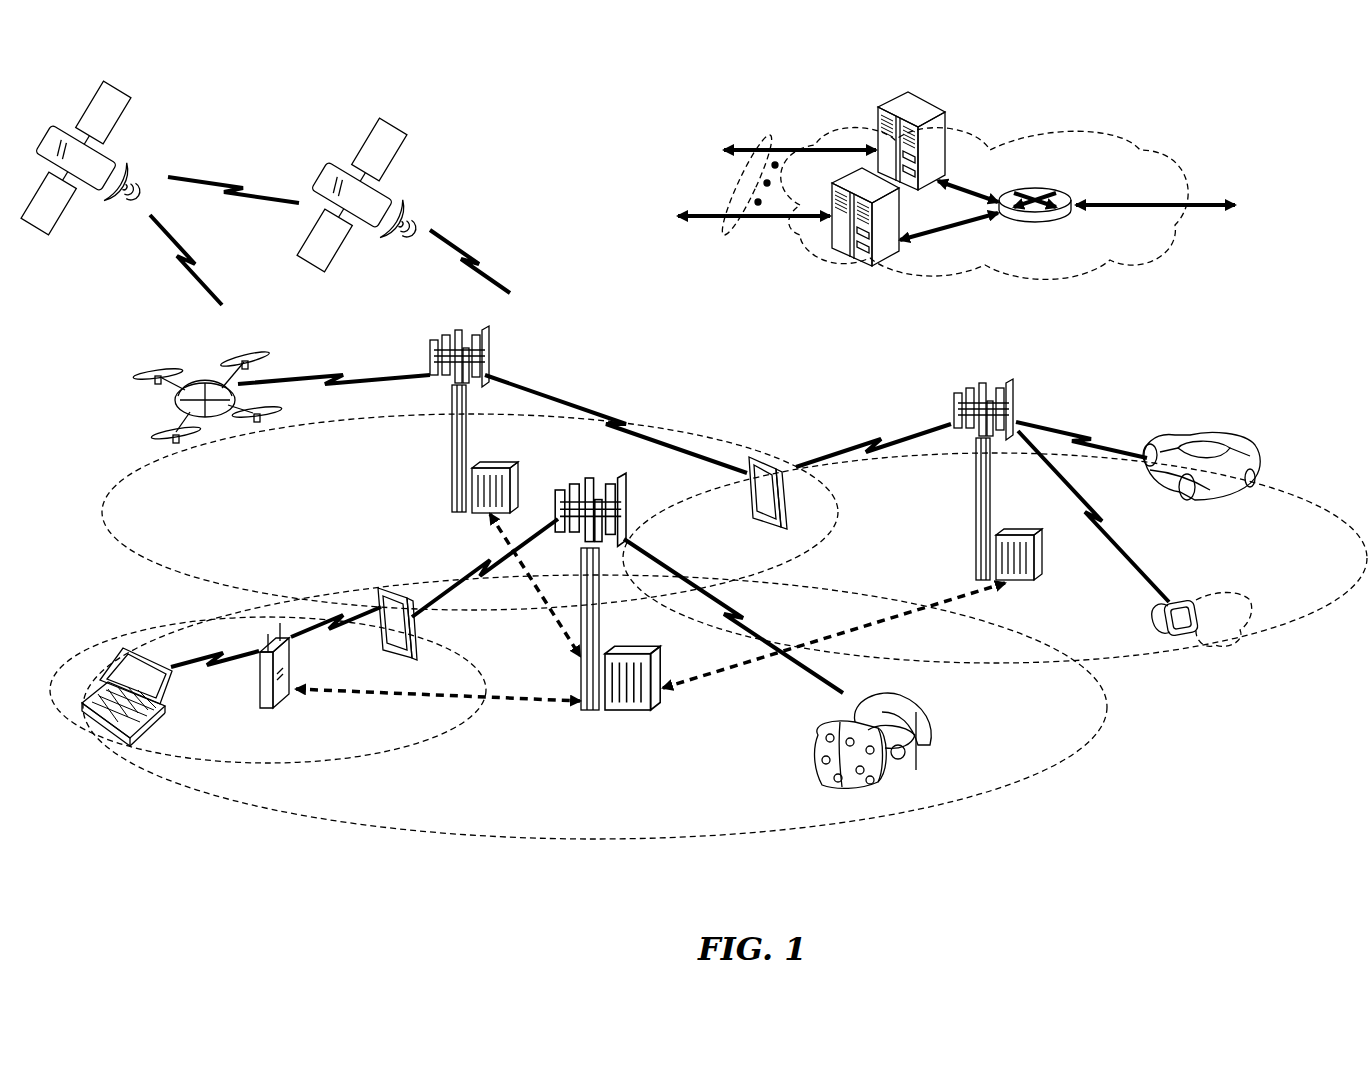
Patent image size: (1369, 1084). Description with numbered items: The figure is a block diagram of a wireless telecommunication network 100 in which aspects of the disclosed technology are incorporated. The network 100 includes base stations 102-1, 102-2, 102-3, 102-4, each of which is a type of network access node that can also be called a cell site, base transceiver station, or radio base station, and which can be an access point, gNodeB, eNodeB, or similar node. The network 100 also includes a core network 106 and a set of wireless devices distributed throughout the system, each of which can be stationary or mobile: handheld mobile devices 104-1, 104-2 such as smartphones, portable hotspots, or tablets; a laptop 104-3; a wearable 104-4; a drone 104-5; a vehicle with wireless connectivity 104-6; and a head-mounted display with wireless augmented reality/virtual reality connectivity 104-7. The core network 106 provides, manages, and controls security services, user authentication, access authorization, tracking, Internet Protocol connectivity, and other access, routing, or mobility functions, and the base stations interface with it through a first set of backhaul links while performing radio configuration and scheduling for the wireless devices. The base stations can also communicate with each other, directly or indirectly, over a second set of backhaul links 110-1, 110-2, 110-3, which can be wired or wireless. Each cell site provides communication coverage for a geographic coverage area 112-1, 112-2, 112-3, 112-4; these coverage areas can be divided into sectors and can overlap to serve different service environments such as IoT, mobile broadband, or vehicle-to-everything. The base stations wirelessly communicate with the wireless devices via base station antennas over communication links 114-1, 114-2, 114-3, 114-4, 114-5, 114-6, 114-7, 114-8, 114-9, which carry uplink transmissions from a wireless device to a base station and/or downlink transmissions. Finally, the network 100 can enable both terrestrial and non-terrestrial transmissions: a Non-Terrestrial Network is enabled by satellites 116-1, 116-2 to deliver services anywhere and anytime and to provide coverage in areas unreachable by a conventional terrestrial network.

The wireless telecommunication network 100 is at (1314, 98).
The base station 102-1 is at (590, 713).
The base station 102-2 is at (452, 470).
The base station 102-3 is at (976, 500).
The base station 102-4 is at (258, 693).
The handheld mobile device 104-1 is at (416, 643).
The handheld mobile device 104-2 is at (745, 500).
The laptop 104-3 is at (107, 738).
The wearable 104-4 is at (1185, 600).
The drone 104-5 is at (216, 436).
The vehicle with wireless connectivity 104-6 is at (1230, 448).
The head-mounted display with wireless AR/VR connectivity 104-7 is at (928, 724).
The core network 106 is at (1078, 272).
The backhaul link 110-1 is at (328, 692).
The backhaul link 110-2 is at (905, 617).
The backhaul link 110-3 is at (552, 618).
The geographic coverage area 112-1 is at (518, 842).
The geographic coverage area 112-2 is at (392, 752).
The geographic coverage area 112-3 is at (170, 577).
The geographic coverage area 112-4 is at (1283, 494).
The communication link 114-1 is at (756, 618).
The communication link 114-2 is at (480, 576).
The communication link 114-3 is at (186, 668).
The communication link 114-4 is at (330, 634).
The communication link 114-5 is at (326, 380).
The communication link 114-6 is at (624, 412).
The communication link 114-7 is at (866, 440).
The communication link 114-8 is at (1116, 502).
The communication link 114-9 is at (1080, 436).
The satellite 116-1 is at (136, 160).
The satellite 116-2 is at (414, 198).